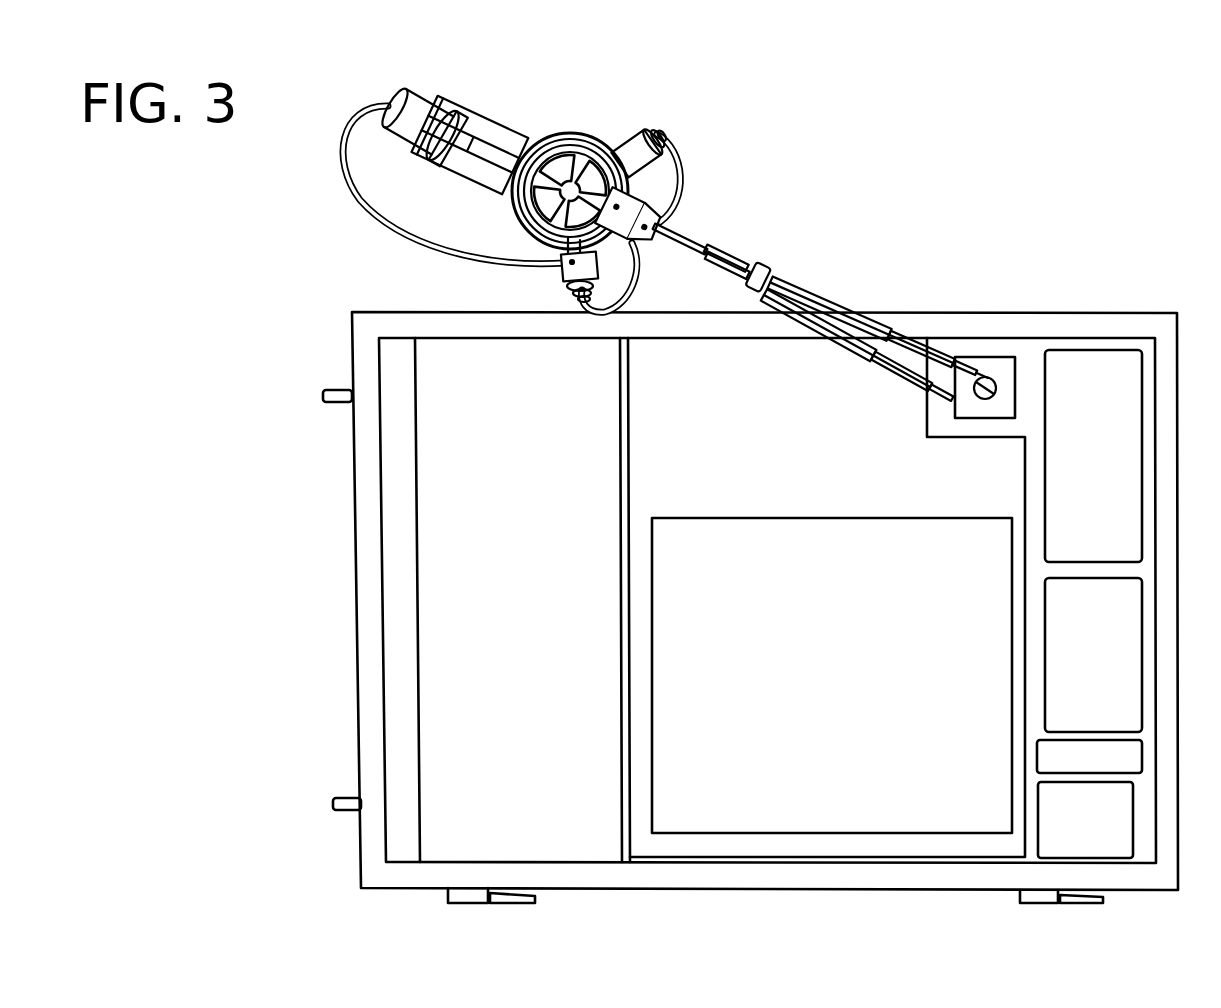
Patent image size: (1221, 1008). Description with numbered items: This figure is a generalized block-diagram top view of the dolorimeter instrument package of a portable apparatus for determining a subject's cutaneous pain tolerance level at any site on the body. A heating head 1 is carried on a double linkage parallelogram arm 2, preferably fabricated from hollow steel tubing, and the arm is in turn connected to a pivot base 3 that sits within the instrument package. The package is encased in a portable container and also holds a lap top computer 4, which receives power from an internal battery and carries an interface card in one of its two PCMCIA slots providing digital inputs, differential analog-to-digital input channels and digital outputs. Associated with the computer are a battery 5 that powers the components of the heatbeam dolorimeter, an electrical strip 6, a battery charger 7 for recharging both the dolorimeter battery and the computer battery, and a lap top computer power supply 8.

The heating head 1 is at (517, 196).
The double linkage parallelogram arm 2 is at (783, 272).
The pivot base 3 is at (990, 375).
The lap top computer 4 is at (798, 800).
The battery 5 is at (1127, 478).
The electrical strip 6 is at (1133, 755).
The battery charger 7 is at (1117, 847).
The lap top computer power supply 8 is at (1130, 675).